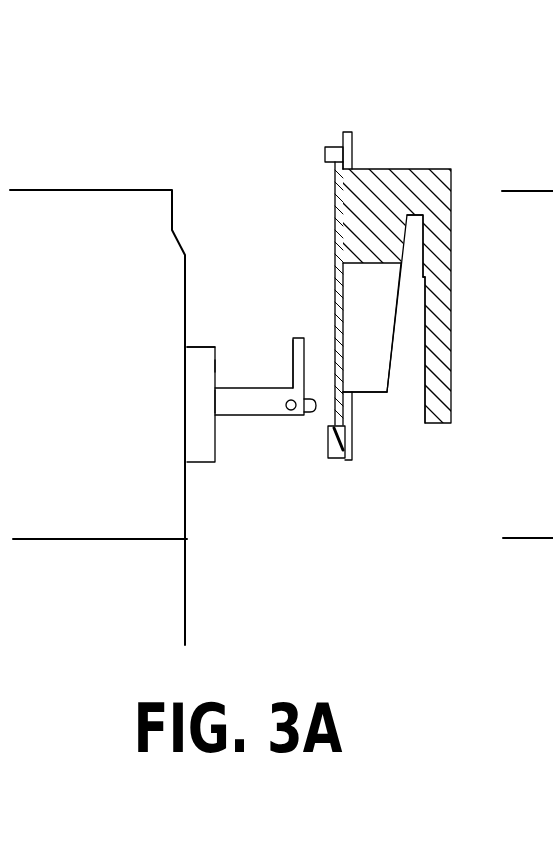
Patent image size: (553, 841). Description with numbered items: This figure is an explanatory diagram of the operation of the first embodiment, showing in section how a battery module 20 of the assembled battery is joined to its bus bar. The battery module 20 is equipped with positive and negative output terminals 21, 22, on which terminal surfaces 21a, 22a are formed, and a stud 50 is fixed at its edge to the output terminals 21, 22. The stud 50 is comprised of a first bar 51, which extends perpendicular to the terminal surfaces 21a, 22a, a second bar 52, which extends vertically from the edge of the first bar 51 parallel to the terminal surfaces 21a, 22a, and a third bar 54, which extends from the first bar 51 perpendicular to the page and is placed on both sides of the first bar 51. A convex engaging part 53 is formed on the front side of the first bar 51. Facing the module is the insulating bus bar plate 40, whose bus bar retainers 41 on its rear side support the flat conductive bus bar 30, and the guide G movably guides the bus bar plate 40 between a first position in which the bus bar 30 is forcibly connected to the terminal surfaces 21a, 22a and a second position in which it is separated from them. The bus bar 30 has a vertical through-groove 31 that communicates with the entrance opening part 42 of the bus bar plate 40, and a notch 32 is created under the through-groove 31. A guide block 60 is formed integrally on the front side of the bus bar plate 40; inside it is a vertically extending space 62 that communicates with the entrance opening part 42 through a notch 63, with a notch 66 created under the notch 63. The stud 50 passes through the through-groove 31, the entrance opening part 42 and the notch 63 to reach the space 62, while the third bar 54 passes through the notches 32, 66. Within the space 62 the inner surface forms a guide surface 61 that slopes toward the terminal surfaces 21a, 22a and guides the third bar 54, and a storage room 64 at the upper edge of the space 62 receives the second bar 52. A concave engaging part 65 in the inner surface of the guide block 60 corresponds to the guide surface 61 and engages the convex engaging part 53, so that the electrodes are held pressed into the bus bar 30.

The battery module 20 is at (72, 206).
The positive output terminal 21 is at (203, 452).
The negative output terminal 22 is at (251, 458).
The terminal surface 21a is at (218, 368).
The terminal surface 22a is at (149, 355).
The bus bar 30 is at (333, 192).
The through-groove 31 is at (335, 262).
The notch 32 is at (328, 428).
The bus bar plate 40 is at (348, 132).
The bus bar retainer 41 is at (327, 150).
The entrance opening part 42 is at (350, 267).
The stud 50 is at (246, 372).
The first bar 51 is at (240, 407).
The second bar 52 is at (292, 350).
The convex engaging part 53 is at (313, 407).
The third bar 54 is at (286, 409).
The guide block 60 is at (408, 169).
The guide surface 61 is at (387, 393).
The space 62 is at (403, 383).
The notch 63 is at (373, 348).
The storage room 64 is at (415, 240).
The concave engaging part 65 is at (428, 278).
The notch 66 is at (356, 413).
The guide G is at (240, 195).